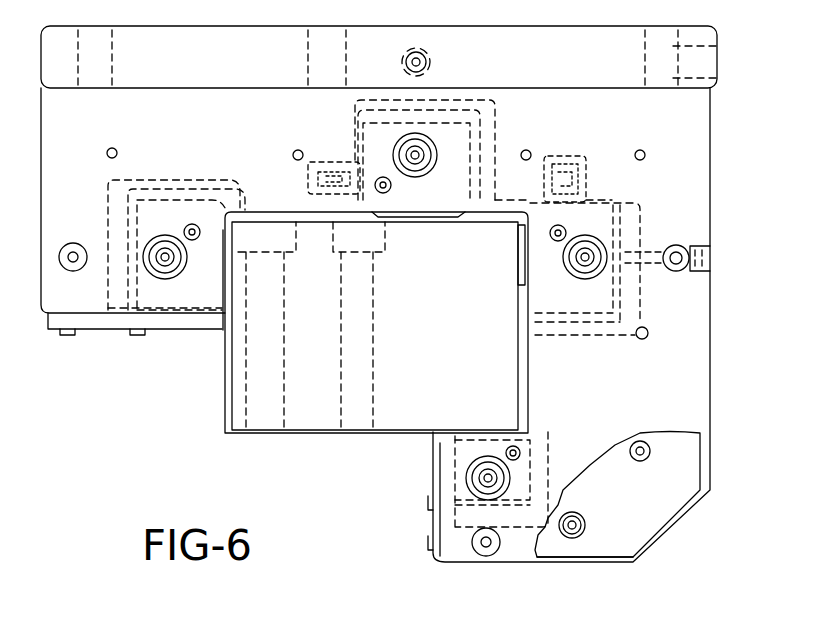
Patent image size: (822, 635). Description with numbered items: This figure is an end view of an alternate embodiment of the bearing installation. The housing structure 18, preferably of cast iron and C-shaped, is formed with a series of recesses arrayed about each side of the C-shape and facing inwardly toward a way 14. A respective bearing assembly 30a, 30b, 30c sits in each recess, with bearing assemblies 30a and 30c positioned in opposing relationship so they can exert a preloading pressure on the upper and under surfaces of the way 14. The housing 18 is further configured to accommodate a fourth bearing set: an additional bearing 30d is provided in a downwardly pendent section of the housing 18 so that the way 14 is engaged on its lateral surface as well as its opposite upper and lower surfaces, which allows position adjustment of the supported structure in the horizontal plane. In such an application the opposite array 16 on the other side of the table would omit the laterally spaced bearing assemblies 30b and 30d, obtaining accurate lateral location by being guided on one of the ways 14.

The way 14 is at (462, 300).
The opposite array 16 is at (748, 3).
The housing structure 18 is at (678, 152).
The bearing assembly 30a is at (475, 155).
The bearing assembly 30b is at (568, 305).
The bearing assembly 30c is at (468, 455).
The additional bearing 30d is at (157, 216).